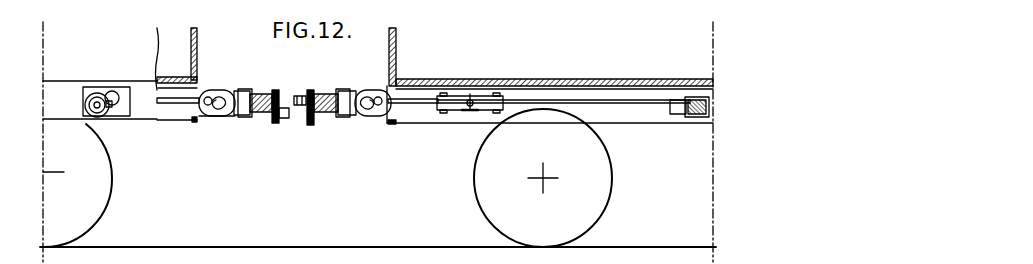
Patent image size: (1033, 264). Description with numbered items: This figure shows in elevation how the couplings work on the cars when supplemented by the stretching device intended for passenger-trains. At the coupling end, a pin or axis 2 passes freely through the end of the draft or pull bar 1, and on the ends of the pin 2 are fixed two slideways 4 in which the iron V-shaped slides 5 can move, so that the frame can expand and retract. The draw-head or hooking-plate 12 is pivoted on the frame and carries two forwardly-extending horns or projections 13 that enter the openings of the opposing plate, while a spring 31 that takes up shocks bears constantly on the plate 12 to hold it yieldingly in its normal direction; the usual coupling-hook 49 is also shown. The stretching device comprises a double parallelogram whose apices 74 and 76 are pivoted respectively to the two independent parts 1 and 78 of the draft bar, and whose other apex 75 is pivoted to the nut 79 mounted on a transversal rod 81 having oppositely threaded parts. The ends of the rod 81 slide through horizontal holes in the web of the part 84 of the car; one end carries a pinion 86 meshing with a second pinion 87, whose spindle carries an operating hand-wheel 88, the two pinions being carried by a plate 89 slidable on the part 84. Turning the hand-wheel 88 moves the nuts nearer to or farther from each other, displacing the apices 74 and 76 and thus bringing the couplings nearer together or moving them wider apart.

The draft or pull bar 1 is at (176, 96).
The pin or axis 2 is at (206, 94).
The slideways 4 is at (216, 113).
The V-shaped slides 5 is at (328, 114).
The draw-head or hooking-plate 12 is at (277, 92).
The horns or projections 13 is at (300, 96).
The spring 31 is at (252, 95).
The coupling-hook 49 is at (369, 113).
The apex of parallelogram 74 is at (440, 108).
The apex of parallelogram 75 is at (471, 96).
The apex of parallelogram 76 is at (498, 94).
The part of the draft or pull bar 78 is at (591, 99).
The nut 79 is at (481, 111).
The transversal rod 81 is at (468, 106).
The part of the car 84 is at (660, 79).
The pinion 86 is at (113, 96).
The pinion 87 is at (100, 96).
The hand-wheel 88 is at (91, 108).
The plate 89 is at (125, 108).